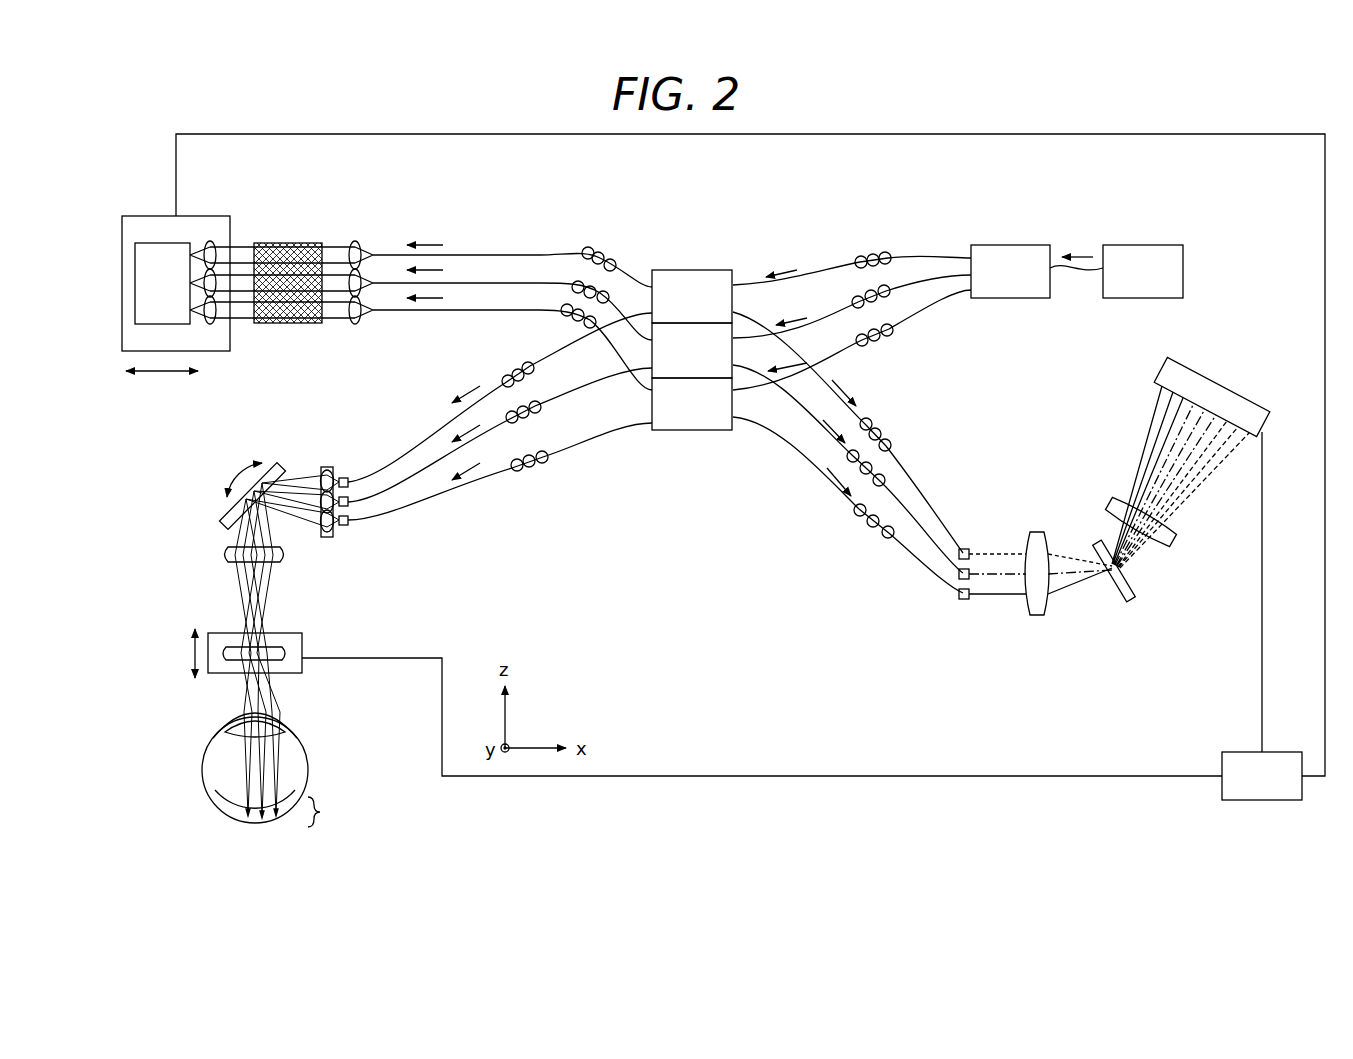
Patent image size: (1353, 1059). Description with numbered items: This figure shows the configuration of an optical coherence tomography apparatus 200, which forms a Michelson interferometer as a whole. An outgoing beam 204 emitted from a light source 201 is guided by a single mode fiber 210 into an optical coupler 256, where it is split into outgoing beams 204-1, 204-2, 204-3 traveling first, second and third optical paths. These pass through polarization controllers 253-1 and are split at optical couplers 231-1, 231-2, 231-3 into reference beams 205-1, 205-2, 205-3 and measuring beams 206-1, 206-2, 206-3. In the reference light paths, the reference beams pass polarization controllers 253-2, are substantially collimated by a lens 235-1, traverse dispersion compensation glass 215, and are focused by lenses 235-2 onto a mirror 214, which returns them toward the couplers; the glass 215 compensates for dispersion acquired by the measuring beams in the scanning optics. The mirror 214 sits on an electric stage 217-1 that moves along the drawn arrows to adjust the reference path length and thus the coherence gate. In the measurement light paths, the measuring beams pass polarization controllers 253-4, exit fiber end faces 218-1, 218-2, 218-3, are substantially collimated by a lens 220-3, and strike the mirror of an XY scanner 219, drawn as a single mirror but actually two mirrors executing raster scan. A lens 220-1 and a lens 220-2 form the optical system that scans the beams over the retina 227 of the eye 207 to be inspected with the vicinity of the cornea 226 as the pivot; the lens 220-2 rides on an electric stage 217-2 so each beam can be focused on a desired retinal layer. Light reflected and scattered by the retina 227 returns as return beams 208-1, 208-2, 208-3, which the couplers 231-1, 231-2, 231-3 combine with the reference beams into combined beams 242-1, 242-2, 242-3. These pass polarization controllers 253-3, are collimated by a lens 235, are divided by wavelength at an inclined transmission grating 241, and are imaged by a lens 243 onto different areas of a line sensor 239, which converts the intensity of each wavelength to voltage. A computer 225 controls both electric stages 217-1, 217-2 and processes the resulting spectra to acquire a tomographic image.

The optical coherence tomography apparatus 200 is at (140, 166).
The light source 201 is at (1143, 271).
The outgoing beam 204 is at (1077, 254).
The outgoing beam 204-1 is at (782, 272).
The outgoing beam 204-2 is at (795, 322).
The outgoing beam 204-3 is at (795, 368).
The reference beam 205-1 is at (437, 246).
The reference beam 205-2 is at (438, 268).
The reference beam 205-3 is at (437, 300).
The measuring beam 206-1 is at (480, 395).
The measuring beam 206-2 is at (478, 435).
The measuring beam 206-3 is at (480, 470).
The eye to be inspected 207 is at (306, 750).
The return beam 208-1 is at (248, 812).
The return beam 208-2 is at (262, 814).
The return beam 208-3 is at (276, 812).
The single mode fiber 210 is at (1078, 272).
The mirror 214 is at (162, 283).
The dispersion compensation glass 215 is at (306, 243).
The electric stage 217-1 is at (226, 352).
The electric stage 217-2 is at (208, 632).
The fiber end face 218-1 is at (352, 487).
The fiber end face 218-2 is at (352, 506).
The fiber end face 218-3 is at (352, 524).
The XY scanner 219 is at (222, 506).
The lens 220-1 is at (224, 556).
The lens 220-2 is at (222, 654).
The lens 220-3 is at (326, 467).
The computer 225 is at (1262, 776).
The cornea 226 is at (286, 716).
The retina 227 is at (258, 823).
The optical coupler 231-1 is at (692, 296).
The optical coupler 231-2 is at (692, 350).
The optical coupler 231-3 is at (692, 404).
The lens 235 is at (1035, 617).
The lens 235-1 is at (353, 326).
The lenses 235-2 is at (212, 240).
The line sensor 239 is at (1223, 380).
The transmission grating 241 is at (1122, 602).
The combined beam 242-1 is at (818, 400).
The combined beam 242-2 is at (830, 445).
The combined beam 242-3 is at (826, 488).
The lens 243 is at (1162, 550).
The polarization controllers 253-1 is at (893, 298).
The polarization controllers 253-2 is at (590, 288).
The polarization controllers 253-3 is at (892, 443).
The polarization controllers 253-4 is at (548, 408).
The optical coupler 256 is at (1010, 271).